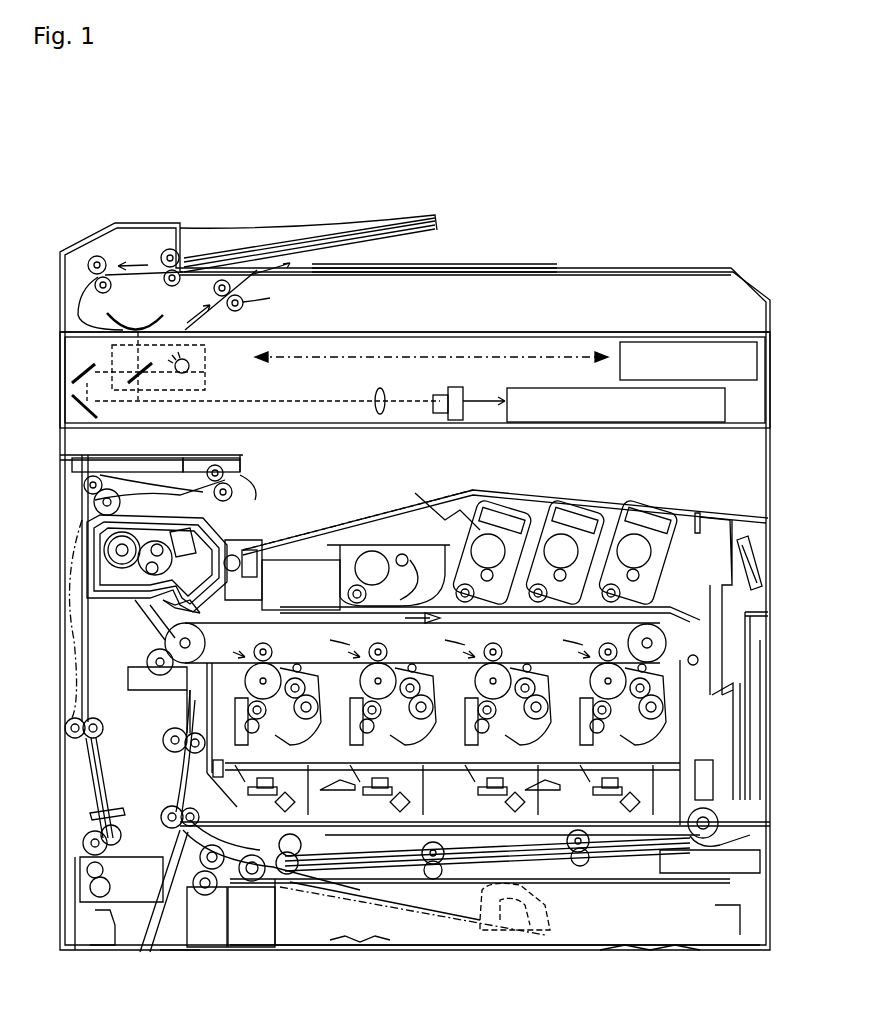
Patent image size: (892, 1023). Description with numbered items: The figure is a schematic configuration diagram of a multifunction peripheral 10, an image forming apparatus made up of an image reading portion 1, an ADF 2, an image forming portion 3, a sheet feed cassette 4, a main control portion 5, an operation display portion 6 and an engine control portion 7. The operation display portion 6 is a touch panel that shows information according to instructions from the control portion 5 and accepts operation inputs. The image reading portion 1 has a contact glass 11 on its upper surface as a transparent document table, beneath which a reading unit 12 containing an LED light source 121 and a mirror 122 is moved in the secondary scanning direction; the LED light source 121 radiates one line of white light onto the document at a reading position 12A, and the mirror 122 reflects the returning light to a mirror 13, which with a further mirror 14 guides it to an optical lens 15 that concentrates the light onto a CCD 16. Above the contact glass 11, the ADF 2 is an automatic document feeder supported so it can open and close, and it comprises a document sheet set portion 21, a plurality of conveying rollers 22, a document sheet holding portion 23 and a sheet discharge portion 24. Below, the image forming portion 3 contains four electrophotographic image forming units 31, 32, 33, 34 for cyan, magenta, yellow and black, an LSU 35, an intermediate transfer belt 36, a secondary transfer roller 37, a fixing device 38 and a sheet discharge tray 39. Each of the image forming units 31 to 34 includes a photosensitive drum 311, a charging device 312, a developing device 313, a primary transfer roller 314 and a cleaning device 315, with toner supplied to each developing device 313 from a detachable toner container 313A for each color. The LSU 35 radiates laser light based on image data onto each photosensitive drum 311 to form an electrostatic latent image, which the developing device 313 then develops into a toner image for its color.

The image reading portion 1 is at (772, 372).
The ADF 2 is at (772, 318).
The image forming portion 3 is at (772, 565).
The sheet feed cassette 4 is at (565, 935).
The main control portion 5 is at (725, 403).
The operation display portion 6 is at (757, 352).
The engine control portion 7 is at (290, 562).
The multifunction peripheral 10 is at (736, 241).
The contact glass 11 is at (560, 333).
The reading unit 12 is at (428, 355).
The reading position 12A is at (258, 366).
The mirror 13 is at (72, 375).
The mirror 14 is at (72, 405).
The optical lens 15 is at (375, 393).
The CCD 16 is at (447, 390).
The document sheet set portion 21 is at (355, 218).
The conveying rollers 22 is at (92, 258).
The document sheet holding portion 23 is at (137, 318).
The sheet discharge portion 24 is at (420, 277).
The image forming unit 31 is at (564, 635).
The image forming unit 32 is at (446, 635).
The image forming unit 33 is at (331, 635).
The image forming unit 34 is at (415, 638).
The LSU 35 is at (416, 828).
The intermediate transfer belt 36 is at (240, 614).
The secondary transfer roller 37 is at (135, 654).
The fixing device 38 is at (74, 523).
The sheet discharge tray 39 is at (322, 522).
The LED light source 121 is at (195, 366).
The mirror 122 is at (150, 384).
The photosensitive drum 311 is at (262, 738).
The charging device 312 is at (235, 738).
The developing device 313 is at (297, 660).
The toner container 313A is at (380, 545).
The primary transfer roller 314 is at (262, 643).
The cleaning device 315 is at (399, 652).